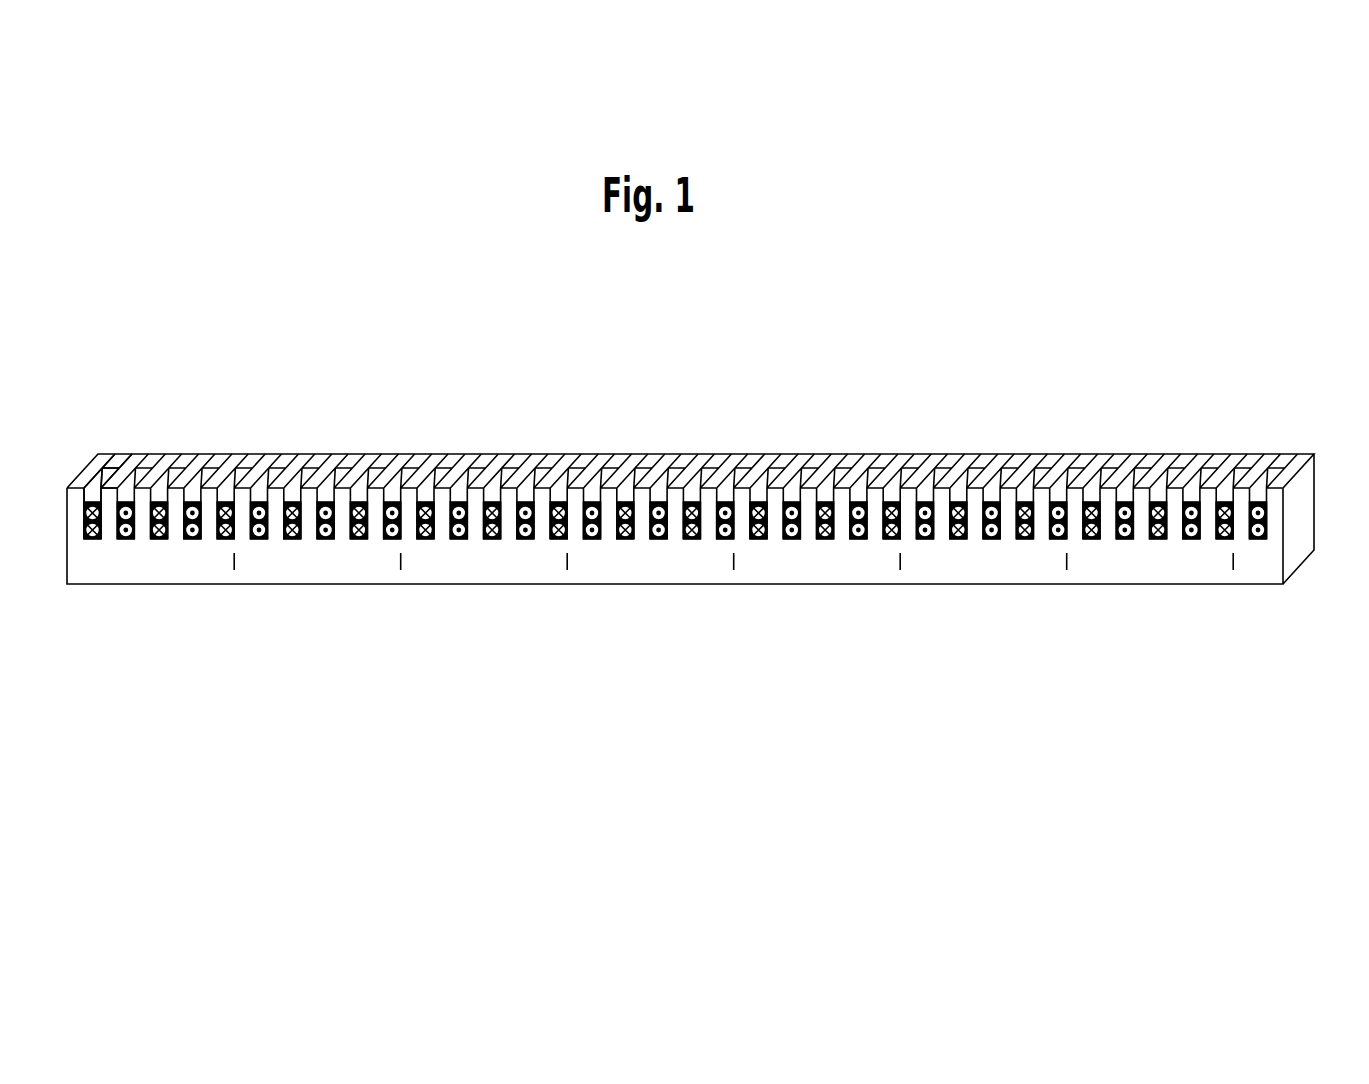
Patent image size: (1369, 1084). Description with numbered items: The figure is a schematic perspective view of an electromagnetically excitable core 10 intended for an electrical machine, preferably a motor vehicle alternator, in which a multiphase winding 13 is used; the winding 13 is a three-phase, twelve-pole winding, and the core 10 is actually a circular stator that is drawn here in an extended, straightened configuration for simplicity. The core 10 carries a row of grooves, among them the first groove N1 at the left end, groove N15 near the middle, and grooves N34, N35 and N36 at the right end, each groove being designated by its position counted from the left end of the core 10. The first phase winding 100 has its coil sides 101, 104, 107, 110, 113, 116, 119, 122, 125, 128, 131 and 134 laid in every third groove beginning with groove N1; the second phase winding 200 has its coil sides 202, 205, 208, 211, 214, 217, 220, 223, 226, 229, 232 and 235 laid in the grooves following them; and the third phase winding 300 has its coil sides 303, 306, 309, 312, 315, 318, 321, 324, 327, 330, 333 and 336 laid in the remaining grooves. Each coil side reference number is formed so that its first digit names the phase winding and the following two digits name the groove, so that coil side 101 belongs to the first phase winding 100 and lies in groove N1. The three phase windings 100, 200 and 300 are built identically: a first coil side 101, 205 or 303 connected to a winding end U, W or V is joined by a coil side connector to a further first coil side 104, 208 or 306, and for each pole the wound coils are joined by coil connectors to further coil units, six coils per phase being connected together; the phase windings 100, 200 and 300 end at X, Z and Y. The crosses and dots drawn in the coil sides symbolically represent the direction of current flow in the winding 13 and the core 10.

The electromagnetically excitable core 10 is at (692, 395).
The multiphase winding 13 is at (826, 490).
The groove N1 is at (125, 457).
The groove N15 is at (592, 455).
The groove N34 is at (1222, 455).
The groove N35 is at (1255, 455).
The groove N36 is at (1287, 457).
The first phase winding 100 is at (100, 480).
The second phase winding 200 is at (162, 452).
The third phase winding 300 is at (193, 453).
The coil side 101 is at (92, 539).
The coil side 202 is at (125, 619).
The coil side 303 is at (168, 645).
The coil side 104 is at (190, 568).
The coil side 205 is at (229, 595).
The coil side 306 is at (267, 621).
The coil side 107 is at (290, 568).
The coil side 208 is at (330, 595).
The coil side 309 is at (367, 621).
The coil side 110 is at (390, 568).
The coil side 211 is at (430, 595).
The coil side 312 is at (467, 621).
The coil side 113 is at (490, 568).
The coil side 214 is at (529, 595).
The coil side 315 is at (555, 645).
The coil side 116 is at (590, 568).
The coil side 217 is at (629, 595).
The coil side 318 is at (667, 621).
The coil side 119 is at (690, 568).
The coil side 220 is at (729, 595).
The coil side 321 is at (767, 621).
The coil side 122 is at (790, 568).
The coil side 223 is at (814, 619).
The coil side 324 is at (866, 621).
The coil side 125 is at (890, 568).
The coil side 226 is at (929, 595).
The coil side 327 is at (966, 621).
The coil side 128 is at (990, 568).
The coil side 229 is at (1029, 595).
The coil side 330 is at (1066, 621).
The coil side 131 is at (1090, 568).
The coil side 232 is at (1129, 595).
The coil side 333 is at (1166, 621).
The coil side 134 is at (1179, 592).
The coil side 235 is at (1214, 619).
The coil side 336 is at (1268, 645).